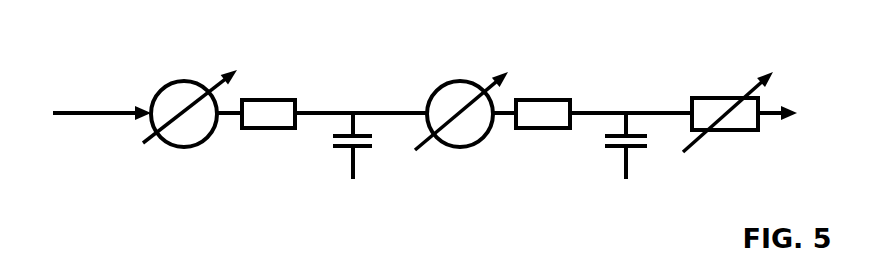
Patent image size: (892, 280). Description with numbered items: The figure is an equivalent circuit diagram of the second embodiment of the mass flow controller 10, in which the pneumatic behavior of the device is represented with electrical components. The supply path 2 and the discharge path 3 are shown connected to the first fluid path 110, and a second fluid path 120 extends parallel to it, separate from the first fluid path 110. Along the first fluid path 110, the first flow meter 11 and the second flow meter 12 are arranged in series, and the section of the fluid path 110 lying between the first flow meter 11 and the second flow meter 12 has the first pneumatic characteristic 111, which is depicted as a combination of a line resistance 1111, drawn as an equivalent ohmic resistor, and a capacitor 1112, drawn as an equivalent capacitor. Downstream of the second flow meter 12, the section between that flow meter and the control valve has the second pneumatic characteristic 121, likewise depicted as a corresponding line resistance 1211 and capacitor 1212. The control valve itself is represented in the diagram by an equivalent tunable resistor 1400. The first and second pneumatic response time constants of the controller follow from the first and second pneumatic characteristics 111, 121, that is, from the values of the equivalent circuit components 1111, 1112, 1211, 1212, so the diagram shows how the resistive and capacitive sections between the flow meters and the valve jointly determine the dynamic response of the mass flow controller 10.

The mass flow controller 10 is at (143, 51).
The supply path 2 is at (98, 113).
The discharge path 3 is at (767, 117).
The first flow meter 11 is at (197, 135).
The second flow meter 12 is at (465, 135).
The first fluid path 110 is at (328, 110).
The second fluid path 120 is at (603, 112).
The first pneumatic characteristic 111 is at (306, 184).
The line resistance 1111 is at (267, 117).
The capacitor 1112 is at (343, 172).
The second pneumatic characteristic 121 is at (579, 184).
The line resistance 1211 is at (538, 120).
The capacitor 1212 is at (617, 172).
The equivalent tunable resistor 1400 is at (735, 125).